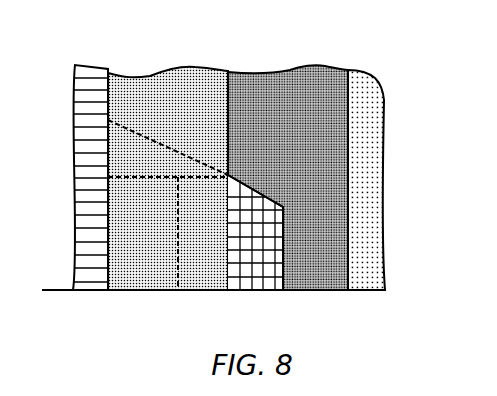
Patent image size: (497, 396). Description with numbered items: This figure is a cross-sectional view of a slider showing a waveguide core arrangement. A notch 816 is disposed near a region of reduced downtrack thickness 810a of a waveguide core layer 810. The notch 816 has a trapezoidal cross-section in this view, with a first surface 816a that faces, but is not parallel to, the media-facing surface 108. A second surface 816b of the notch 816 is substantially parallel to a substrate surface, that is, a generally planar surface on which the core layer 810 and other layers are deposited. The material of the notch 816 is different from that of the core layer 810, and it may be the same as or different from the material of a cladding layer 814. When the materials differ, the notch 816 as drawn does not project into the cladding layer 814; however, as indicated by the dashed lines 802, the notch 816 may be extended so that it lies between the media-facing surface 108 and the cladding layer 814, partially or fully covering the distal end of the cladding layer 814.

The media-facing surface 108 is at (63, 291).
The dashed lines 802 is at (177, 210).
The waveguide core layer 810 is at (315, 134).
The region of reduced downtrack thickness 810a is at (317, 280).
The cladding layer 814 is at (157, 134).
The notch 816 is at (267, 280).
The first surface 816a is at (248, 187).
The second surface 816b is at (283, 256).